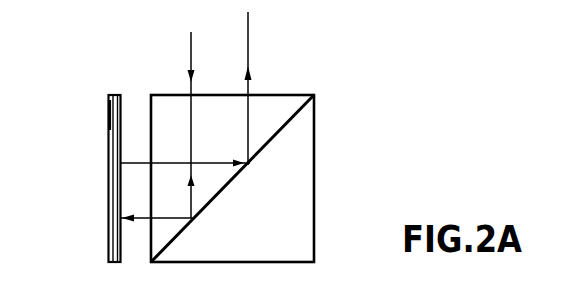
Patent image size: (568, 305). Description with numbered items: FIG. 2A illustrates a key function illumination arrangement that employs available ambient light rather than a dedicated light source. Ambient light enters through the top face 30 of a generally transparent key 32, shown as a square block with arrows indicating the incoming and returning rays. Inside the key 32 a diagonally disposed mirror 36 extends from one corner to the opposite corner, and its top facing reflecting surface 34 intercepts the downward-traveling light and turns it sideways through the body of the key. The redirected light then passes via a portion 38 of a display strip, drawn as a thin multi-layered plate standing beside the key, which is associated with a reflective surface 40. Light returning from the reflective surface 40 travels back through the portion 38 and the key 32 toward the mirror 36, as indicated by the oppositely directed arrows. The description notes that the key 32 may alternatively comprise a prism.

The top face 30 is at (258, 95).
The key 32 is at (366, 115).
The top facing reflecting surface 34 is at (295, 95).
The mirror 36 is at (265, 146).
The portion of a display strip 38 is at (125, 137).
The reflective surface 40 is at (110, 117).